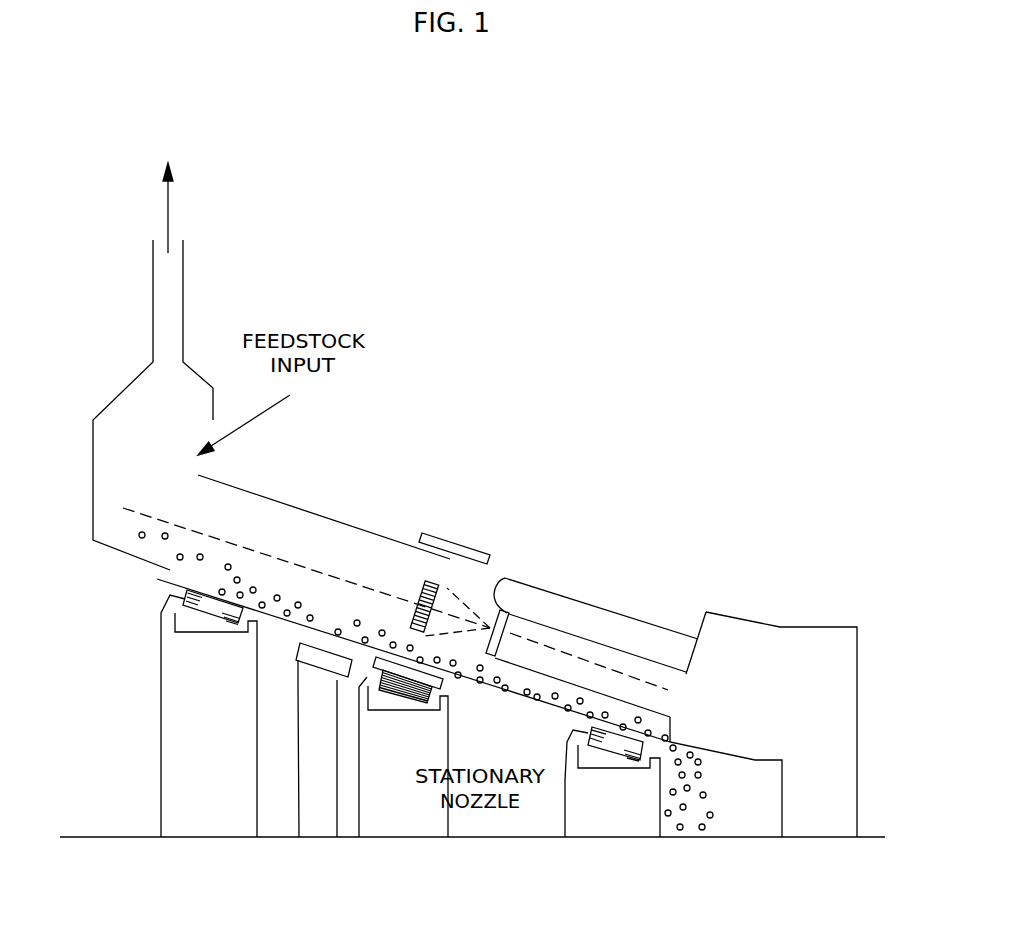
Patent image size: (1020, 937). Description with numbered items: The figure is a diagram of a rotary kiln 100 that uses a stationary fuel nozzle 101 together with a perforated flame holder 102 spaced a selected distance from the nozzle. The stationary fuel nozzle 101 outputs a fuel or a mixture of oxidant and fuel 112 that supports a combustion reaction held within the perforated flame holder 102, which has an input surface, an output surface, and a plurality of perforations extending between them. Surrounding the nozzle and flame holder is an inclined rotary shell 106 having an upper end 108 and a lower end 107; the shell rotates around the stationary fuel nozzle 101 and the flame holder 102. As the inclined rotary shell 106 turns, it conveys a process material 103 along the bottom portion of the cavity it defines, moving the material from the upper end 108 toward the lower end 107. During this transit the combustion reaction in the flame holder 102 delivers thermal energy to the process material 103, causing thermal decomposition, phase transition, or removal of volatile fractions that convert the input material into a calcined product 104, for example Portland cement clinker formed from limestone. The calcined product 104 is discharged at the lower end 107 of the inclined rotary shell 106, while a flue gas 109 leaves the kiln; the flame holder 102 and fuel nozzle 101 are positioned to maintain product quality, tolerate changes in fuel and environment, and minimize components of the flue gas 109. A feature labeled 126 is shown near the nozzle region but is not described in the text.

The rotary kiln 100 is at (578, 262).
The stationary fuel nozzle 101 is at (487, 658).
The perforated flame holder 102 is at (420, 590).
The process material 103 is at (228, 582).
The calcined product 104 is at (722, 820).
The inclined rotary shell 106 is at (397, 541).
The lower end 107 is at (665, 617).
The upper end 108 is at (318, 508).
The flue gas 109 is at (168, 210).
The mixture of oxidant and fuel 112 is at (467, 592).
The nozzle housing 126 is at (505, 578).